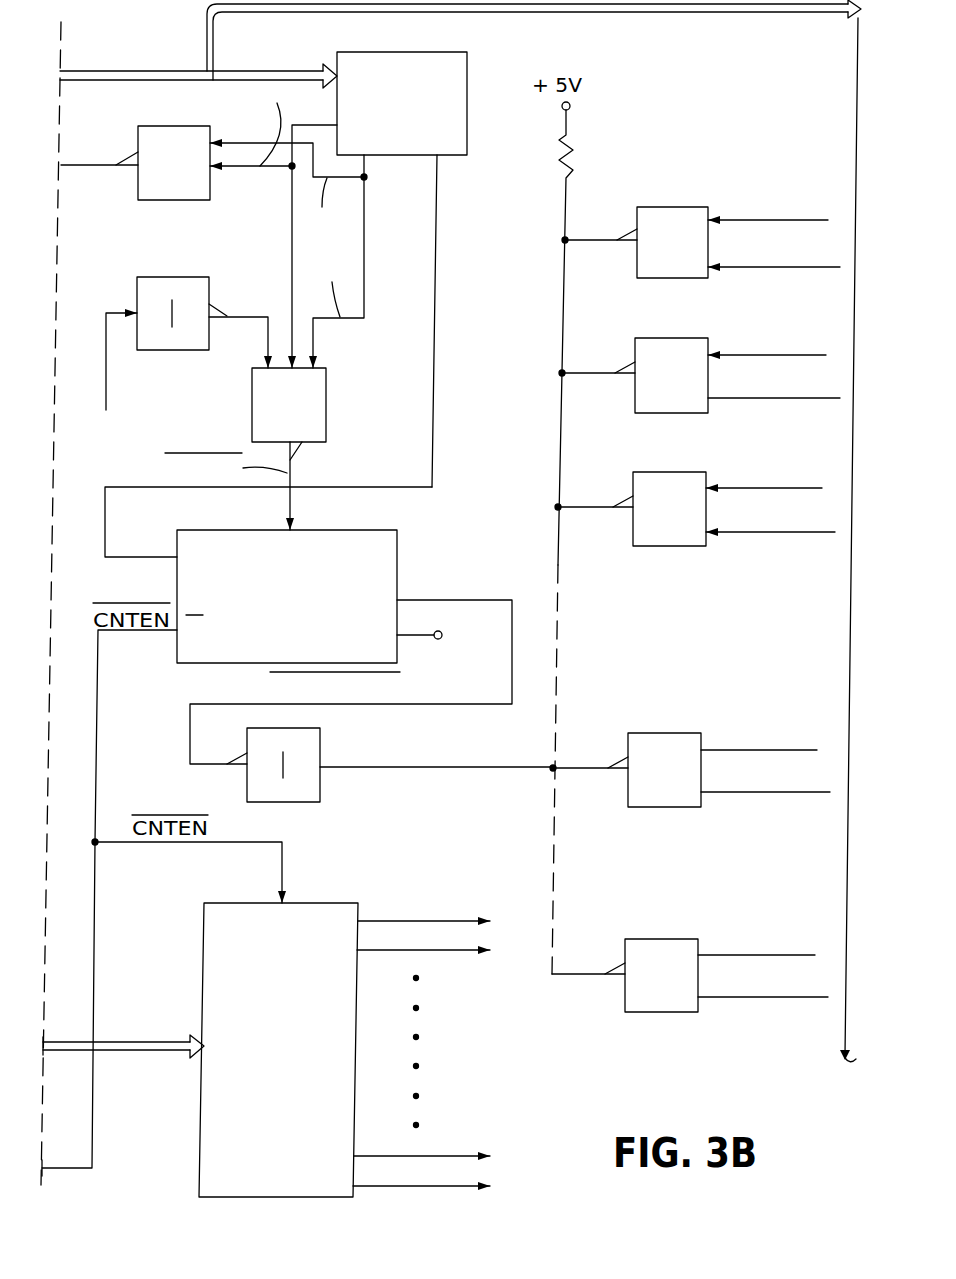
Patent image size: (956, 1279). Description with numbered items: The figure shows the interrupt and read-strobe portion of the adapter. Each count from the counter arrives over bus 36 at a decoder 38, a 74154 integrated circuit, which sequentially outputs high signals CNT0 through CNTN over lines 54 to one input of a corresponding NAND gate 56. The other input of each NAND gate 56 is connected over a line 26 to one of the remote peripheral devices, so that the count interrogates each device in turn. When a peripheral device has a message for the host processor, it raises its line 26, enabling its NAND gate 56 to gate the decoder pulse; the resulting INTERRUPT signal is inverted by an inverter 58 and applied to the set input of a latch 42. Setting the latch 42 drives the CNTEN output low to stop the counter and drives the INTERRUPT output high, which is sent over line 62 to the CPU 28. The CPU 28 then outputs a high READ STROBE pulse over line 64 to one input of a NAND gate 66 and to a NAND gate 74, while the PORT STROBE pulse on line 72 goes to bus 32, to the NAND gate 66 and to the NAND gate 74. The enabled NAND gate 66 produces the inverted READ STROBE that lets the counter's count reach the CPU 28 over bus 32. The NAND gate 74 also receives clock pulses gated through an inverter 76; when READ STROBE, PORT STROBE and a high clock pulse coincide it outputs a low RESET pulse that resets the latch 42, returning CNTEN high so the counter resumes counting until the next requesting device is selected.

The CPU 28 is at (450, 58).
The bus 32 is at (691, 12).
The line 62 is at (437, 186).
The line 64 is at (292, 231).
The NAND gate 66 is at (155, 195).
The line 72 is at (318, 325).
The NAND gate 74 is at (310, 433).
The inverter 76 is at (185, 347).
The latch 42 is at (388, 542).
The inverter 58 is at (320, 788).
The decoder 38 is at (334, 912).
The bus 36 is at (170, 1043).
The lines 54 is at (810, 220).
The NAND gate 56 is at (678, 210).
The line 26 is at (800, 267).